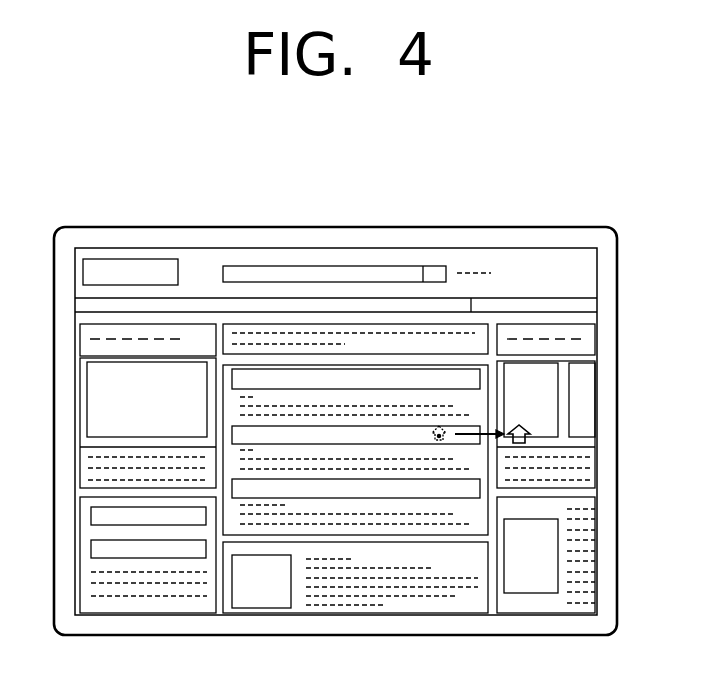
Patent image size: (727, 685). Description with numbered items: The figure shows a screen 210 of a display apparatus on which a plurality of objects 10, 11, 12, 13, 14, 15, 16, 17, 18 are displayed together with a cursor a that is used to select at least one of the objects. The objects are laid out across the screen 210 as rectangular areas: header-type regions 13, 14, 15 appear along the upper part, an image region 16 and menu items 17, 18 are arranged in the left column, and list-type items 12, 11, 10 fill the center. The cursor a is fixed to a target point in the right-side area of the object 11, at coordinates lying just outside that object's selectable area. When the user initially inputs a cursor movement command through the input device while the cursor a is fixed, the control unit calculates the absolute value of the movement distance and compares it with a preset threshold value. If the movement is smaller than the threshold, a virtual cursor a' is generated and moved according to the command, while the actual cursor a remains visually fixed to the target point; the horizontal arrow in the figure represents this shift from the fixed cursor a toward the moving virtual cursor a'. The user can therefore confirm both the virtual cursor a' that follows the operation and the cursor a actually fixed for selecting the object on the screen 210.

The screen 210 is at (477, 248).
The object 10 is at (480, 481).
The object 11 is at (443, 519).
The object 12 is at (480, 378).
The object 13 is at (203, 324).
The object 14 is at (443, 325).
The object 15 is at (577, 322).
The object 16 is at (120, 362).
The object 17 is at (90, 511).
The object 18 is at (90, 545).
The cursor a is at (464, 550).
The virtual cursor a' is at (588, 433).